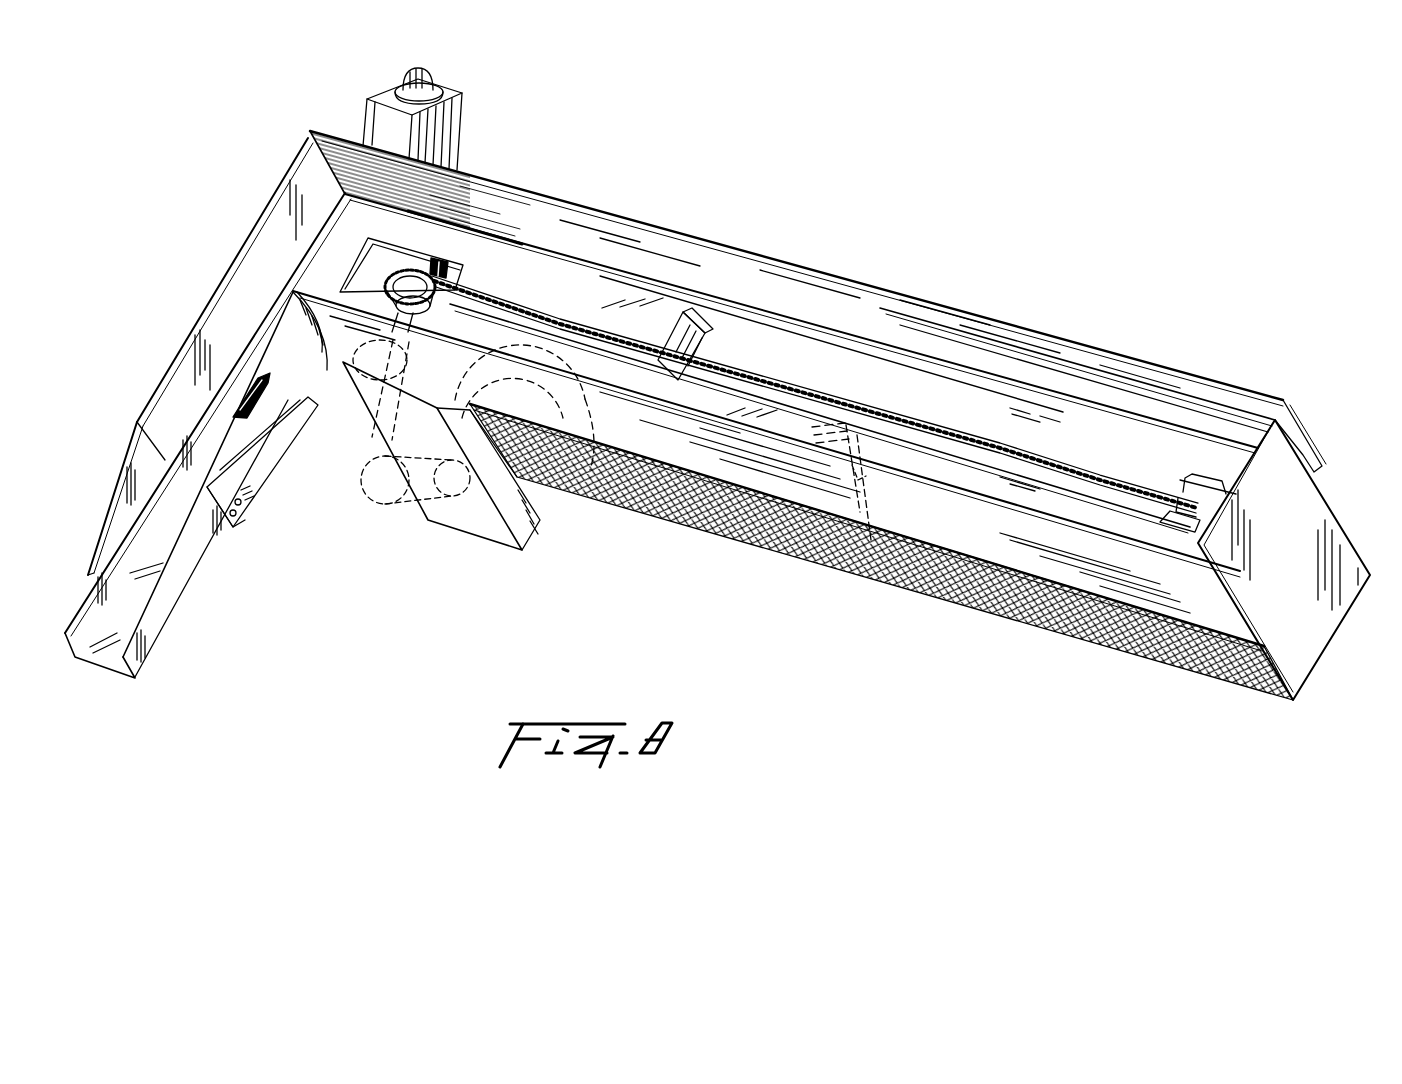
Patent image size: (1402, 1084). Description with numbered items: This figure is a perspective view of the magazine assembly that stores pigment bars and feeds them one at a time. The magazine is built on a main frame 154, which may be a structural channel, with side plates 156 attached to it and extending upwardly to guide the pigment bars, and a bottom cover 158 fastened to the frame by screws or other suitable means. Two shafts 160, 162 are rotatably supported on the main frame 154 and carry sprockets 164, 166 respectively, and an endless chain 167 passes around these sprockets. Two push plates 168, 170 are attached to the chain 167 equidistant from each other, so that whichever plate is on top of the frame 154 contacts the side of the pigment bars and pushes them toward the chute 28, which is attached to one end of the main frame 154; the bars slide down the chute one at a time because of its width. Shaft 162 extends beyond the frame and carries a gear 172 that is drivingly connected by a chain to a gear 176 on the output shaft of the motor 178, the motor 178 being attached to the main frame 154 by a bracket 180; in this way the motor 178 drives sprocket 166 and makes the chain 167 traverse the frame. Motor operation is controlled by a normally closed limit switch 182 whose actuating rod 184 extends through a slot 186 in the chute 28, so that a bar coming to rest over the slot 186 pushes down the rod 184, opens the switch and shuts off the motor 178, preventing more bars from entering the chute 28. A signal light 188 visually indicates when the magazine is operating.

The chute 28 is at (135, 602).
The main frame 154 is at (1067, 437).
The side plates 156 is at (930, 318).
The bottom cover 158 is at (803, 556).
The shaft 160 is at (1220, 680).
The shaft 162 is at (437, 275).
The sprocket 164 is at (1203, 530).
The sprocket 166 is at (393, 280).
The endless chain 167 is at (812, 392).
The push plate 168 is at (697, 330).
The push plate 170 is at (867, 580).
The gear 172 is at (382, 428).
The gear 176 is at (427, 520).
The motor 178 is at (583, 490).
The bracket 180 is at (473, 532).
The limit switch 182 is at (282, 448).
The actuating rod 184 is at (247, 398).
The slot 186 is at (263, 388).
The signal light 188 is at (430, 78).